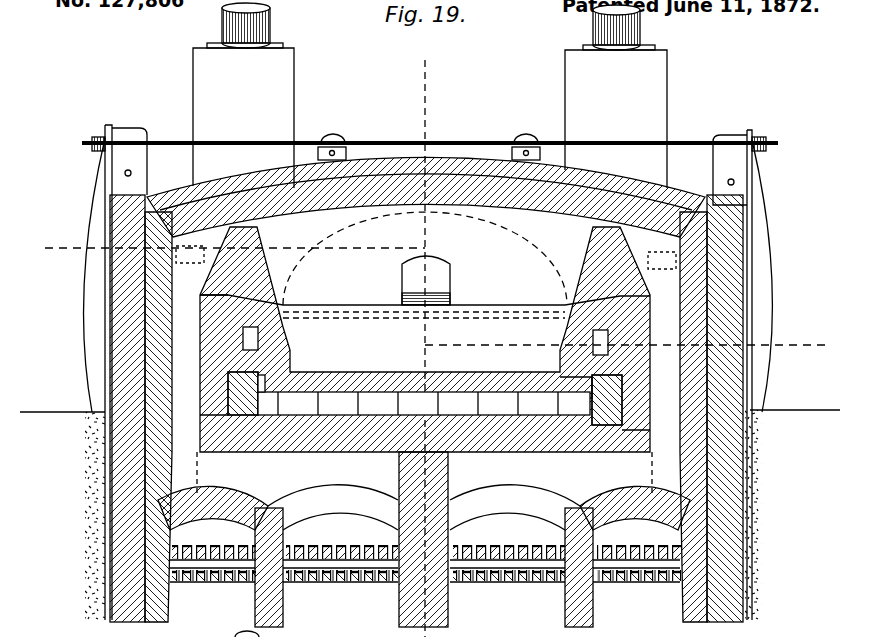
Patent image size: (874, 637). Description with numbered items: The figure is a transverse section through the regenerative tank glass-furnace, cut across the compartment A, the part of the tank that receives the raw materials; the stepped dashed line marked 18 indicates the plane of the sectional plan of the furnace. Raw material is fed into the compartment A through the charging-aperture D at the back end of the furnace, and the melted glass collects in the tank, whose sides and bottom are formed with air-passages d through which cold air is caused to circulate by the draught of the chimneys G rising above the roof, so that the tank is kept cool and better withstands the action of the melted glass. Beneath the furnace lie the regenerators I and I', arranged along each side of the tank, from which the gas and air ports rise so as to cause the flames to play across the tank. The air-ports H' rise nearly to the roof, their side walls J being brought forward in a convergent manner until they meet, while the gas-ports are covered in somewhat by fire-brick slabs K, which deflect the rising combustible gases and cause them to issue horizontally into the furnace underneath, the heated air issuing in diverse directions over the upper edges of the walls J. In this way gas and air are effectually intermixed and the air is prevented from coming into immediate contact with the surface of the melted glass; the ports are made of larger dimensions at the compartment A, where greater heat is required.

The chimney G is at (430, 95).
The side wall J is at (425, 339).
The air-passage d is at (425, 371).
The compartment A is at (425, 323).
The charging-aperture D is at (432, 280).
The fire-brick slab K is at (426, 257).
The air-port H' is at (426, 384).
The regenerator I is at (424, 534).
The regenerator I' is at (424, 533).
The section line 18 18 is at (437, 292).